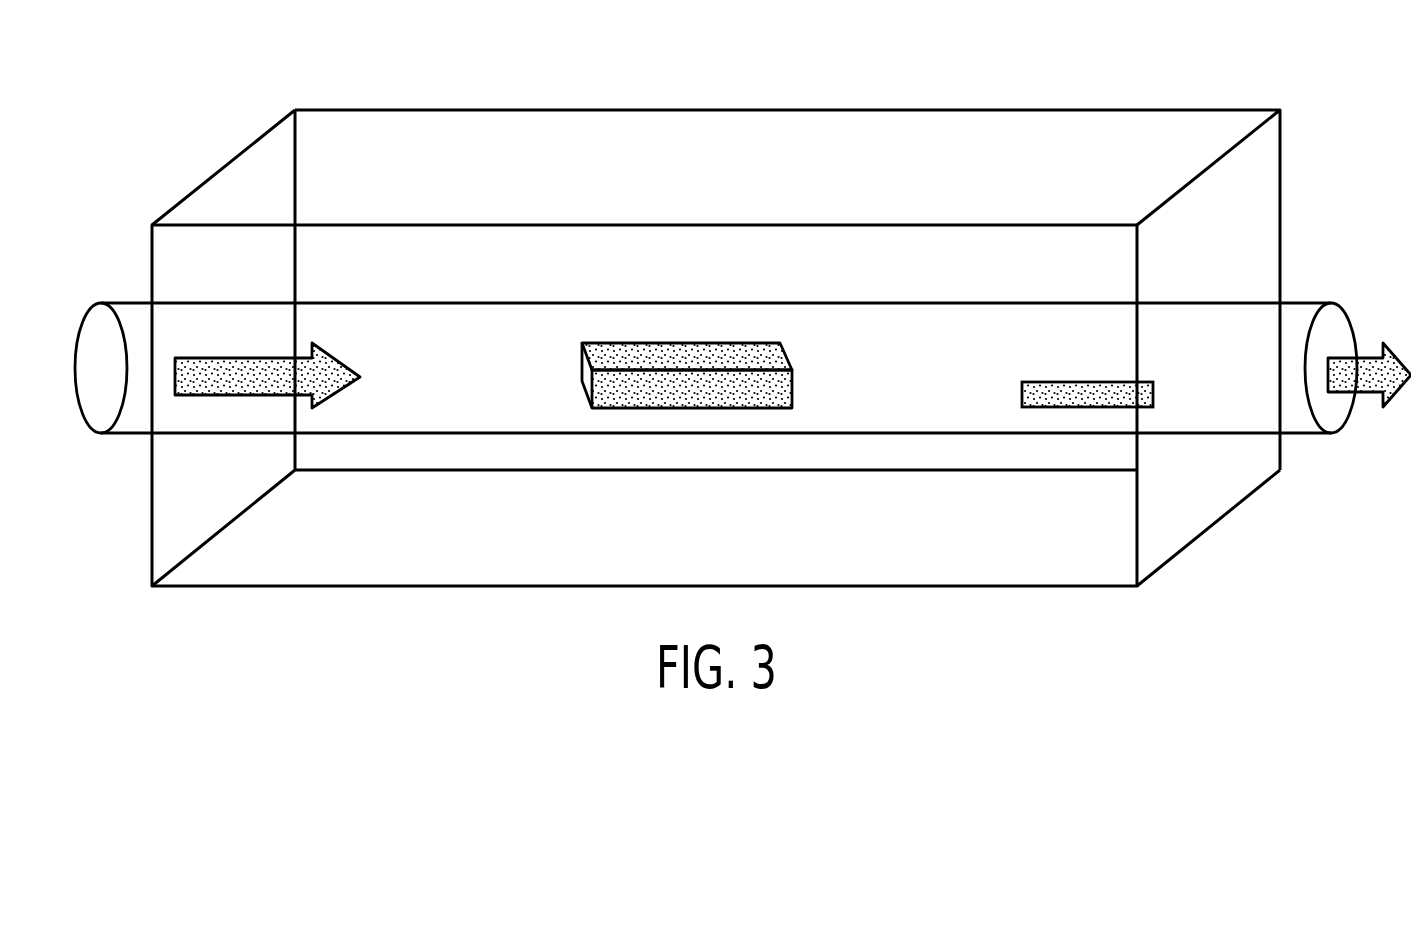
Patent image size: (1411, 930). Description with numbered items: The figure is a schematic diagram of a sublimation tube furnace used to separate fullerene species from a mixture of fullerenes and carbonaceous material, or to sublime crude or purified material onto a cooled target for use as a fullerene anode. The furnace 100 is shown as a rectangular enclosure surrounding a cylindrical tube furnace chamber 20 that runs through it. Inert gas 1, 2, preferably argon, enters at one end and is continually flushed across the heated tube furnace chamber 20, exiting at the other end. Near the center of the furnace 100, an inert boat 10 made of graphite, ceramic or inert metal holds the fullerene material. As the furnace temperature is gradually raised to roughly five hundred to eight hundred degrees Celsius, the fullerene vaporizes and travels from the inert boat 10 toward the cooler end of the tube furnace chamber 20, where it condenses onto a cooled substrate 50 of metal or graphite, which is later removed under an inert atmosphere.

The furnace 100 is at (928, 110).
The tube furnace chamber 20 is at (1307, 302).
The inert gas 1 is at (215, 358).
The inert gas 2 is at (1364, 356).
The inert boat 10 is at (792, 417).
The cooled substrate 50 is at (1066, 382).